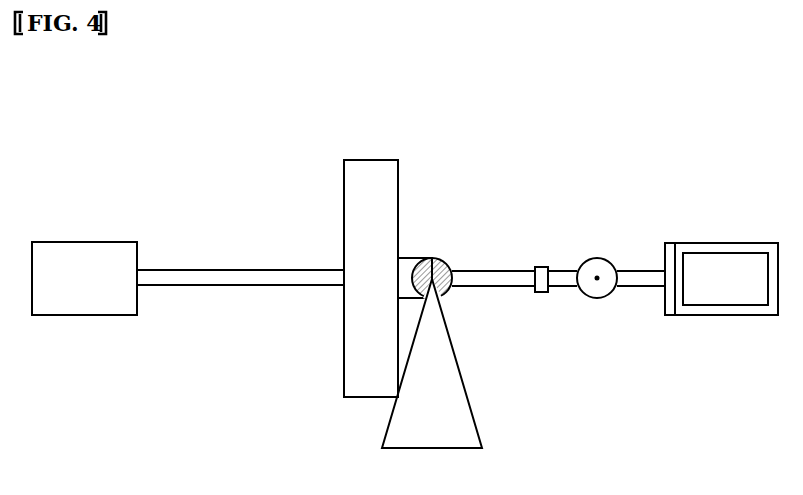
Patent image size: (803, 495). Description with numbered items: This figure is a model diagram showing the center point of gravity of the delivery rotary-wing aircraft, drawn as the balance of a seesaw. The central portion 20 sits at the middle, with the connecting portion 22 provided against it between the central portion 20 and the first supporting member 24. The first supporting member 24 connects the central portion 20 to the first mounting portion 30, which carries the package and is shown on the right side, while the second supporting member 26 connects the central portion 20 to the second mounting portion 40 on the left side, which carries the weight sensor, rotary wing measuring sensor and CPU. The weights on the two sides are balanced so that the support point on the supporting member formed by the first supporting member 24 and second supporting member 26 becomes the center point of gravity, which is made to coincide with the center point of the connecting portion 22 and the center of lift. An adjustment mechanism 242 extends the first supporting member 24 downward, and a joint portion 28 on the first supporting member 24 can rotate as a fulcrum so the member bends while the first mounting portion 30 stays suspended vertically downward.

The central portion 20 is at (371, 158).
The connecting portion 22 is at (432, 258).
The first supporting member 24 is at (500, 270).
The adjustment mechanism 242 is at (541, 292).
The second supporting member 26 is at (243, 268).
The joint portion 28 is at (596, 258).
The first mounting portion 30 is at (720, 243).
The second mounting portion 40 is at (83, 242).